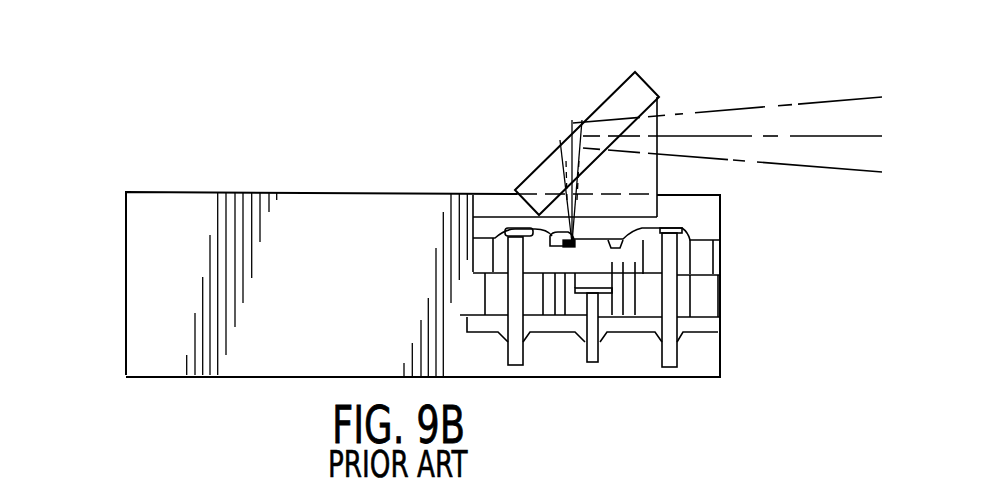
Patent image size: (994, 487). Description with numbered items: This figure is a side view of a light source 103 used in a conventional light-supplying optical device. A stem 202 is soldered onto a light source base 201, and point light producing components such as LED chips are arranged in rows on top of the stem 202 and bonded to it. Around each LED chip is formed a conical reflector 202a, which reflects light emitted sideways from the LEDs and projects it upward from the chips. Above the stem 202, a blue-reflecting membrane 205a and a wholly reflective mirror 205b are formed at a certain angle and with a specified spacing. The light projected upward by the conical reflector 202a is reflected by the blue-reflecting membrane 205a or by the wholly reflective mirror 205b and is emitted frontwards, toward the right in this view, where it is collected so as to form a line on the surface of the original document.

The light source 103 is at (199, 160).
The light source base 201 is at (148, 267).
The stem 202 is at (708, 257).
The conical reflector 202a is at (561, 226).
The blue-reflecting membrane 205a is at (662, 108).
The wholly reflective mirror 205b is at (608, 98).